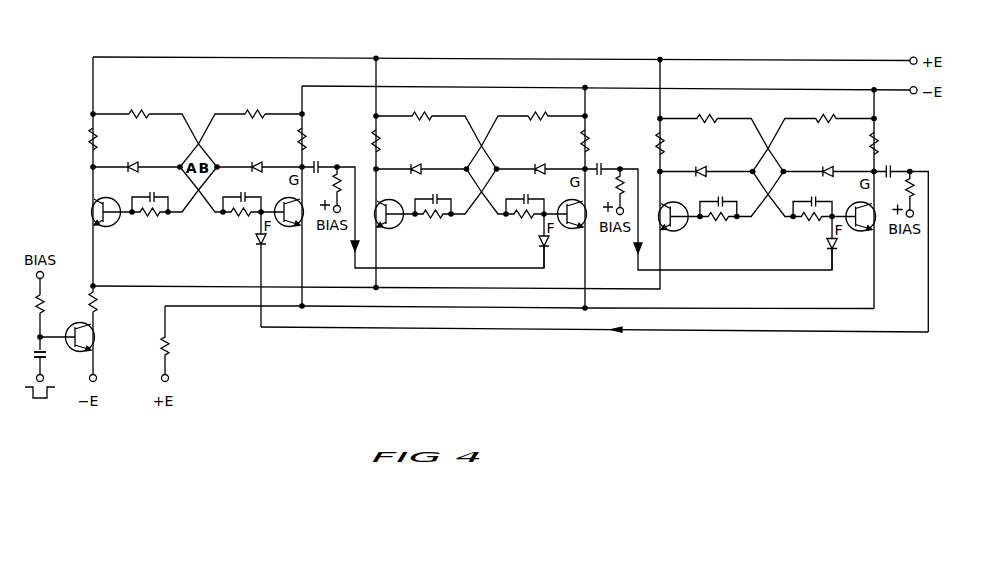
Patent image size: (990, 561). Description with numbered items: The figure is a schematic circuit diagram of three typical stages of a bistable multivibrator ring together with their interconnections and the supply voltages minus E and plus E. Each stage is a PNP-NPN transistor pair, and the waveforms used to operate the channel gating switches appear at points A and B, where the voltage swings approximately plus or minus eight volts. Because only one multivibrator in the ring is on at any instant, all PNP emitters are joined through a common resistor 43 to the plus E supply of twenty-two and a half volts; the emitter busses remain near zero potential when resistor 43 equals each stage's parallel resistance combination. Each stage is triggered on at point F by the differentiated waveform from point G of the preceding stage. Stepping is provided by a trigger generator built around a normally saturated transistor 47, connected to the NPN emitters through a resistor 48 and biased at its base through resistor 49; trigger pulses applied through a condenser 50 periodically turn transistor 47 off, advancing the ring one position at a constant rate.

The common resistor 43 is at (172, 345).
The normally saturated transistor 47 is at (94, 341).
The resistor 48 is at (97, 303).
The resistor 49 is at (45, 303).
The condenser 50 is at (37, 356).